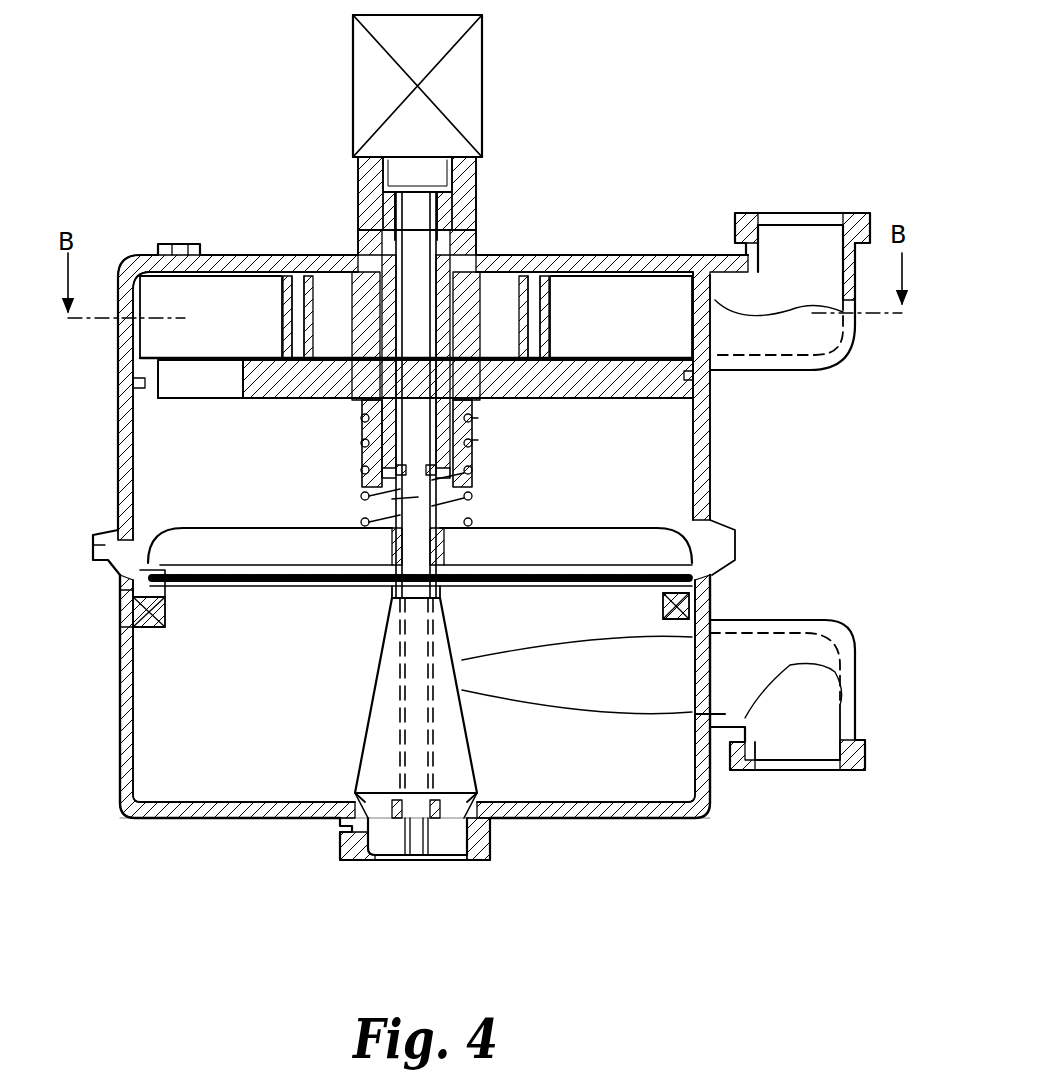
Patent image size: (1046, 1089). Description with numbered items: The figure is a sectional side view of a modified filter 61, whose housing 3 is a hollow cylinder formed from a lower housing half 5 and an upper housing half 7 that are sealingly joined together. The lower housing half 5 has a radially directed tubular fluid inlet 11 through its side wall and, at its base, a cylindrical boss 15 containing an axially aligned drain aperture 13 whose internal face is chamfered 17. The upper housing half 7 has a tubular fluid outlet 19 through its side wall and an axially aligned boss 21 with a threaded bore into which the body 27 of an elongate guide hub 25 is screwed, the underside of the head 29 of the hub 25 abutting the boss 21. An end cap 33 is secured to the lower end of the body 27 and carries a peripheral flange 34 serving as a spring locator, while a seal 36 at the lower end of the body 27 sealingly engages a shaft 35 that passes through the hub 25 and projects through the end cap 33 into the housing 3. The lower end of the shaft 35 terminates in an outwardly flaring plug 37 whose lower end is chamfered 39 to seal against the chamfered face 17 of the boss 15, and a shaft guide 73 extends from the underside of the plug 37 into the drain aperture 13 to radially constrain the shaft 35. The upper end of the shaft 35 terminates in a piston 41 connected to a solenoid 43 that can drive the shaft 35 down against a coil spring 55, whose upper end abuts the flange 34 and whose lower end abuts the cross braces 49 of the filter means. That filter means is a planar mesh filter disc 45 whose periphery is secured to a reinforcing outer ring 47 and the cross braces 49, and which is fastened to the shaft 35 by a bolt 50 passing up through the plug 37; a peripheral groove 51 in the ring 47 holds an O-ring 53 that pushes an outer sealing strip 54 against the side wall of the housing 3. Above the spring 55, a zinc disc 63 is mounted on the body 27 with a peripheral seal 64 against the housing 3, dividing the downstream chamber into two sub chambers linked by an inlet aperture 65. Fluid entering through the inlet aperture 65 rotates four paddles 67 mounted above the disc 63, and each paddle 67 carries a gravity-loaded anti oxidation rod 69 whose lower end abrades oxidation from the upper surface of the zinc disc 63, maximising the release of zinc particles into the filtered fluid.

The housing 3 is at (733, 479).
The lower housing half 5 is at (712, 590).
The upper housing half 7 is at (712, 430).
The fluid inlet 11 is at (800, 618).
The drain aperture 13 is at (463, 860).
The boss 15 is at (490, 836).
The chamfer 17 is at (373, 793).
The fluid outlet 19 is at (748, 222).
The boss 21 is at (470, 243).
The guide hub 25 is at (346, 213).
The body 27 is at (375, 432).
The head 29 is at (476, 190).
The end cap 33 is at (472, 462).
The peripheral flange 34 is at (472, 416).
The shaft 35 is at (392, 499).
The seal 36 is at (392, 466).
The plug 37 is at (447, 660).
The chamfer 39 is at (480, 790).
The piston 41 is at (400, 165).
The solenoid 43 is at (470, 82).
The filter disc 45 is at (555, 598).
The outer ring 47 is at (147, 577).
The cross braces 49 is at (558, 530).
The bolt 50 is at (412, 600).
The peripheral groove 51 is at (150, 597).
The O-ring 53 is at (163, 625).
The outer sealing strip 54 is at (130, 623).
The coil spring 55 is at (474, 443).
The modified filter 61 is at (633, 147).
The zinc disc 63 is at (608, 400).
The seal 64 is at (686, 398).
The inlet aperture 65 is at (222, 395).
The paddles 67 is at (416, 317).
The anti oxidation rod 69 is at (300, 300).
The shaft guide 73 is at (395, 840).